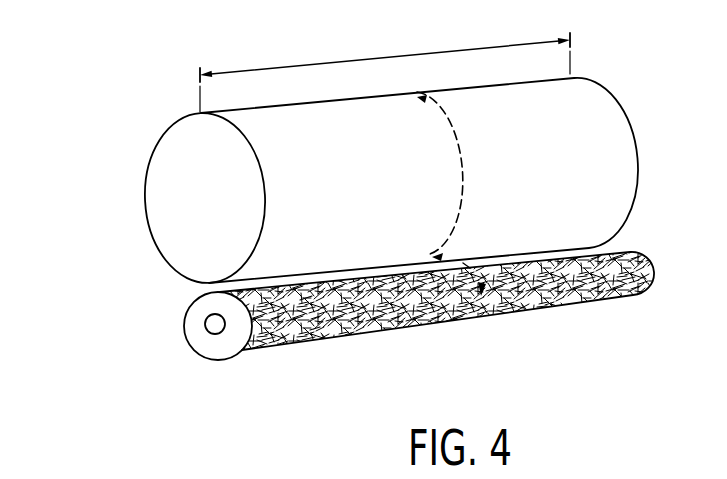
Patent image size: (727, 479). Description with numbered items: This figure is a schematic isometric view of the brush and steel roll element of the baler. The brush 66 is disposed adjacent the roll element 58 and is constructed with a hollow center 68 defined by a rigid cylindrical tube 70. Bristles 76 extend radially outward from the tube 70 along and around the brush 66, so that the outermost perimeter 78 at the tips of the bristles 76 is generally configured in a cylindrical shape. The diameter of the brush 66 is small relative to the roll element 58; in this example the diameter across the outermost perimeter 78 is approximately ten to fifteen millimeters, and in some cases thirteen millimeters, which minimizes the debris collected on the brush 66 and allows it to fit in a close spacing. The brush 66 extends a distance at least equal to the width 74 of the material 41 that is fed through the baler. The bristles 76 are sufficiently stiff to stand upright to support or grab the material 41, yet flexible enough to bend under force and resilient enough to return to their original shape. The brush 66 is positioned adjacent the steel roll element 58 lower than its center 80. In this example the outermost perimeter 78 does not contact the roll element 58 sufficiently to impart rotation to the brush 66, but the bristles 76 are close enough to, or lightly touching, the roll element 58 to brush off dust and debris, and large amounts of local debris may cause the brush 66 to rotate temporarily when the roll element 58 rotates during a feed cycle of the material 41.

The material 41 is at (468, 165).
The roll element 58 is at (598, 117).
The brush 66 is at (560, 307).
The hollow center 68 is at (210, 328).
The rigid cylindrical tube 70 is at (224, 322).
The width 74 is at (387, 55).
The bristles 76 is at (340, 313).
The outermost perimeter 78 is at (480, 318).
The center 80 is at (207, 193).